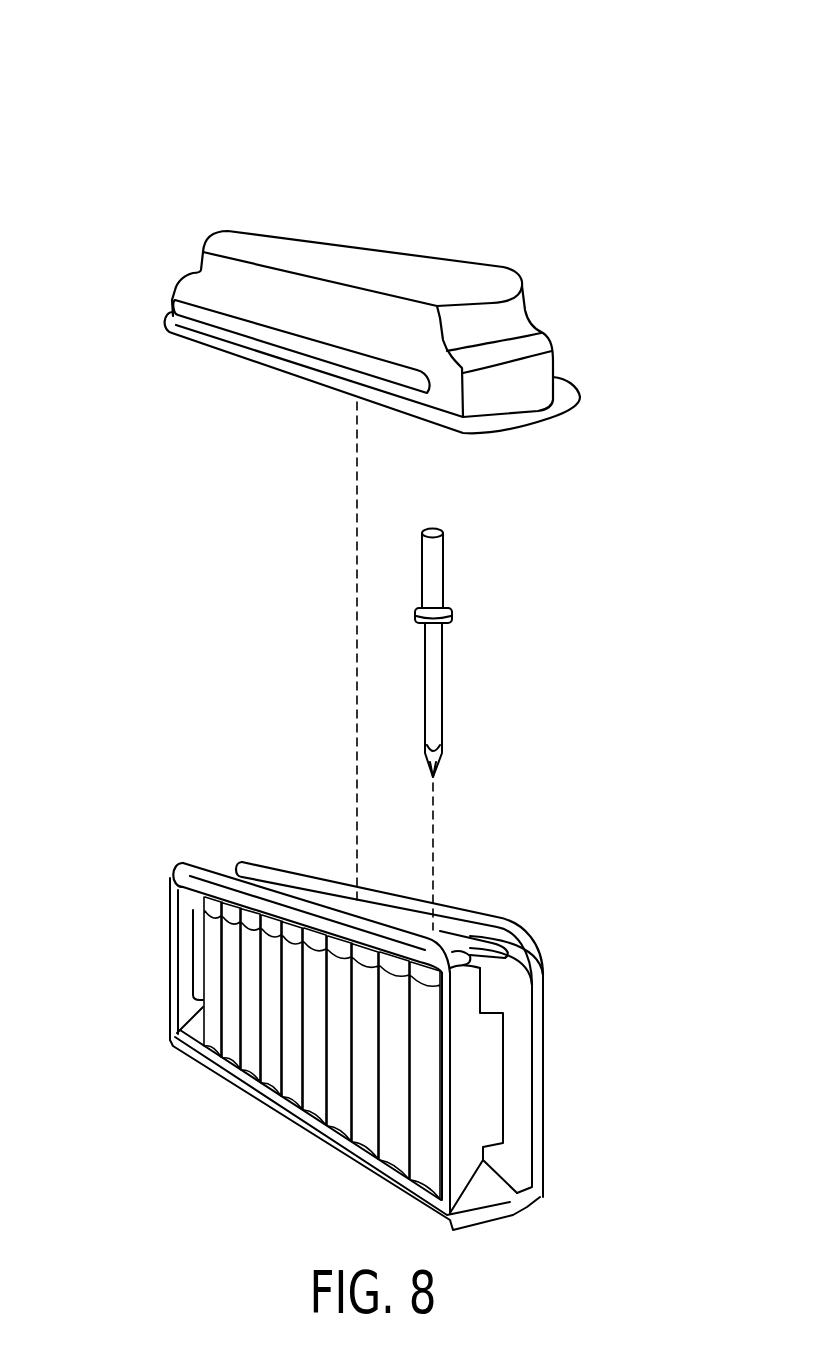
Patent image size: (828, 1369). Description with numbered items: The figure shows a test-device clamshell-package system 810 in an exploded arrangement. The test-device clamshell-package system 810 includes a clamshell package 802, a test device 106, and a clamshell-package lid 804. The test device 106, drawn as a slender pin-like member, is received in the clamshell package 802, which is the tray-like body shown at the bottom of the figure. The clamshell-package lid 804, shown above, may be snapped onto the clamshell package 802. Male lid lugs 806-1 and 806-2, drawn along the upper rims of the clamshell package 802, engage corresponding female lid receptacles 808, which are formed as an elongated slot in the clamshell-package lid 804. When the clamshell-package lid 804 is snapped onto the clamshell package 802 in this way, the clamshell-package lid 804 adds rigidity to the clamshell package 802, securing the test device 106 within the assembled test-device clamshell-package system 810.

The test-device clamshell-package system 810 is at (254, 90).
The clamshell-package lid 804 is at (423, 208).
The female lid receptacles 808 is at (187, 310).
The test device 106 is at (466, 589).
The clamshell package 802 is at (556, 917).
The male lid lug 806-1 is at (195, 878).
The male lid lug 806-2 is at (467, 932).